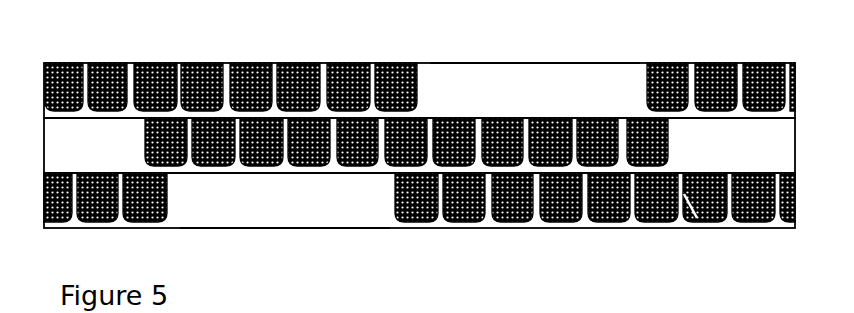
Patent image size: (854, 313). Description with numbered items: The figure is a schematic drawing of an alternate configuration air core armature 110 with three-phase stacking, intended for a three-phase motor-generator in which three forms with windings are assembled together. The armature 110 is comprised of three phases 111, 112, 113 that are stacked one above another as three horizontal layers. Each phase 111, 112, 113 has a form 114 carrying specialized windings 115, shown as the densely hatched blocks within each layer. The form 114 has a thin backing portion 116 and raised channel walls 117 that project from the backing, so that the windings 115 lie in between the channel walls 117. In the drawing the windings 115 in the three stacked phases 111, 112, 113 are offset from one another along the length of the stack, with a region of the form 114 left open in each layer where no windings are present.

The armature 110 is at (86, 25).
The first phase 111 is at (441, 76).
The second phase 112 is at (810, 134).
The third phase 113 is at (442, 221).
The form 114 is at (595, 63).
The windings 115 is at (665, 63).
The thin backing portion 116 is at (660, 228).
The channel walls 117 is at (697, 218).